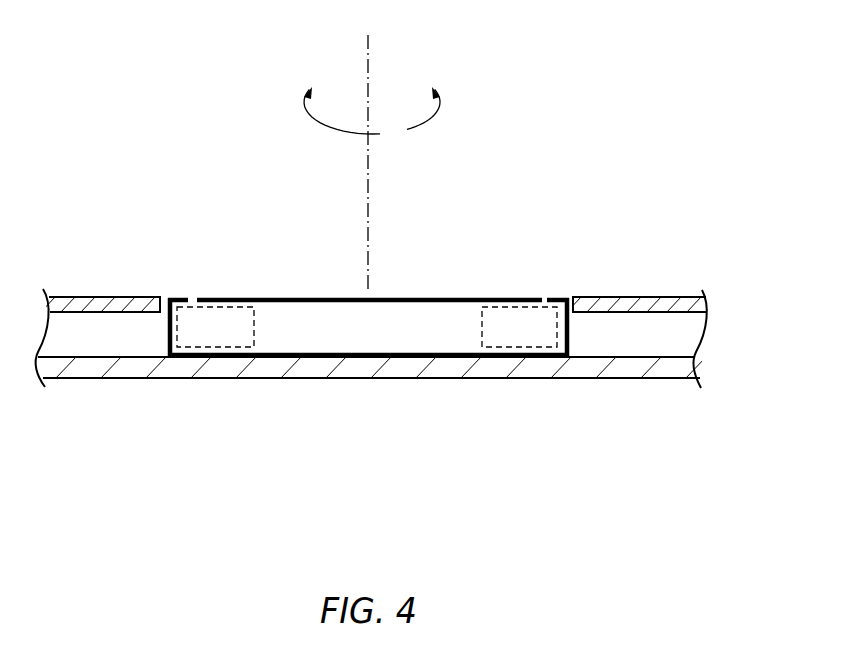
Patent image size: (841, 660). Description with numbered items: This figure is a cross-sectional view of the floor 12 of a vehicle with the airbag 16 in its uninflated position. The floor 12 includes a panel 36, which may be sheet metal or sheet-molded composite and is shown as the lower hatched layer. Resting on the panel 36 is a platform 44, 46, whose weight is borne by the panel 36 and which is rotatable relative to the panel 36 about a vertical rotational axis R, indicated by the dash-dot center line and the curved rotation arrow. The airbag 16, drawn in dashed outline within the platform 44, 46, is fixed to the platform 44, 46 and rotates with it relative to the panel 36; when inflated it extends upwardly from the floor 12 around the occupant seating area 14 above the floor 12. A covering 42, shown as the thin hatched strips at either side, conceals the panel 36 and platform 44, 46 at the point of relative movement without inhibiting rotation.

The occupant seating area 14 is at (546, 92).
The floor 12 is at (385, 301).
The covering 42 is at (660, 297).
The panel 36 is at (660, 378).
The platform 44 is at (403, 390).
The platform 46 is at (403, 390).
The airbag 16 is at (487, 375).